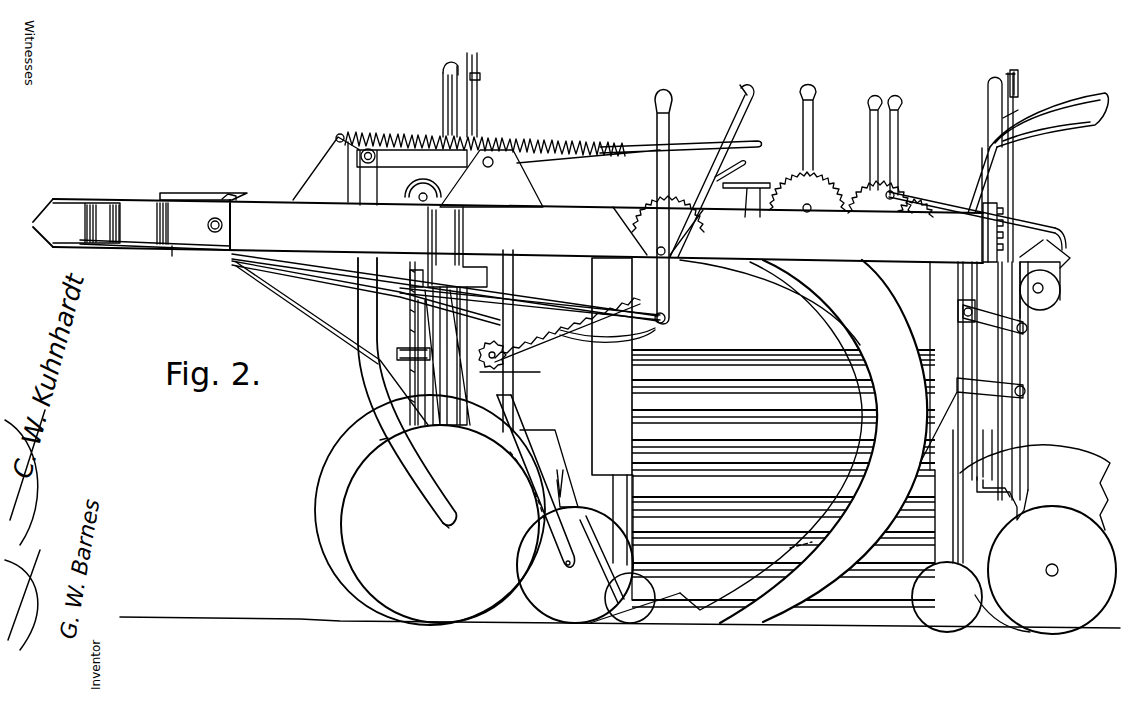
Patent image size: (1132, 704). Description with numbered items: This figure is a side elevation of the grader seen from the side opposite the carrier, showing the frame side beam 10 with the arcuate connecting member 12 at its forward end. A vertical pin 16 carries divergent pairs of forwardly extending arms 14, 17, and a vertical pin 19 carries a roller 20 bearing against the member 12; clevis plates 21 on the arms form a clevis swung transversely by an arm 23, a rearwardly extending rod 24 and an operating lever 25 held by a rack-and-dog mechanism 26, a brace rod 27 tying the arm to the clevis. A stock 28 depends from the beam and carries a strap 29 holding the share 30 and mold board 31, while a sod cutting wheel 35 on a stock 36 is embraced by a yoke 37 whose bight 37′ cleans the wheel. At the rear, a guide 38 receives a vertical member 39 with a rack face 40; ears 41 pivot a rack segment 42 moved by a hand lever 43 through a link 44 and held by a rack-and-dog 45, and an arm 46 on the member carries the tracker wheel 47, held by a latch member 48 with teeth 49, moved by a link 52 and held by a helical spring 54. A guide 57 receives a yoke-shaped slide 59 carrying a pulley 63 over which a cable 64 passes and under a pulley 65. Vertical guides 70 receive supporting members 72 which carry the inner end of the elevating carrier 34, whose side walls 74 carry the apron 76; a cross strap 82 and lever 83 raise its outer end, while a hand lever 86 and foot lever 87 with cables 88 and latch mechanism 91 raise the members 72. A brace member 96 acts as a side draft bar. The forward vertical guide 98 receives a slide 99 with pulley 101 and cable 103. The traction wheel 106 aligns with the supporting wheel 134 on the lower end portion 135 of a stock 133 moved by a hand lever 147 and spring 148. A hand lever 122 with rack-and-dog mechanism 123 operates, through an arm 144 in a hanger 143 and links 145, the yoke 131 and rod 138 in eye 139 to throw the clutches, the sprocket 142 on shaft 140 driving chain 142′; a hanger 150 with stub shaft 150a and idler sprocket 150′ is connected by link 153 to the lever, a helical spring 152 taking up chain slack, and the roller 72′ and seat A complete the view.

The side beam 10 is at (518, 231).
The arcuate connecting member 12 is at (120, 226).
The forwardly extending arms 14 is at (190, 197).
The vertical pin 16 is at (232, 196).
The forwardly extending arms 17 is at (160, 247).
The vertical pin 19 is at (93, 204).
The roller 20 is at (85, 222).
The clevis plates 21 is at (31, 223).
The arm 23 is at (236, 262).
The rearwardly-extending rod 24 is at (340, 274).
The operating lever 25 is at (670, 300).
The rack-and-dog mechanism 26 is at (667, 198).
The brace rod 27 is at (174, 256).
The stock 28 is at (848, 306).
The strap 29 is at (814, 542).
The share 30 is at (634, 622).
The mold board 31 is at (923, 496).
The elevating carrier 34 is at (612, 490).
The sod cutting wheel 35 is at (560, 612).
The stock 36 is at (514, 380).
The yoke 37 is at (560, 460).
The bight 37′ is at (603, 627).
The guide 38 is at (1000, 352).
The vertical member 39 is at (998, 232).
The rack face 40 is at (1028, 223).
The ears 41 is at (1043, 295).
The rack segment 42 is at (1066, 262).
The hand lever 43 is at (899, 153).
The link 44 is at (967, 204).
The rack-and-dog 45 is at (895, 195).
The arm 46 is at (1003, 503).
The tracker wheel 47 is at (1052, 570).
The latch member 48 is at (1027, 430).
The teeth 49 is at (1017, 510).
The link 52 is at (958, 306).
The helical spring 54 is at (1034, 331).
The guide 57 is at (1010, 182).
The yoke-shaped slide 59 is at (987, 104).
The pulley 63 is at (1020, 80).
The cable 64 is at (1006, 118).
The pulley 65 is at (1030, 252).
The vertical guides 70 is at (958, 330).
The supporting members 72 is at (608, 483).
The roller 72′ is at (645, 594).
The side walls 74 is at (628, 520).
The apron 76 is at (783, 478).
The cross strap 82 is at (773, 366).
The lever 83 is at (810, 141).
The hand lever 86 is at (870, 152).
The foot lever 87 is at (745, 163).
The cables 88 is at (752, 208).
The latch mechanism 91 is at (893, 180).
The brace member 96 is at (333, 322).
The vertical guide 98 is at (440, 172).
The yoke-shaped slide 99 is at (456, 105).
The pulley 101 is at (475, 72).
The cable 103 is at (478, 118).
The traction wheel 106 is at (318, 480).
The hand lever 122 is at (730, 135).
The rack-and-dog mechanism 123 is at (699, 213).
The yoke 131 is at (452, 362).
The stock 133 is at (360, 374).
The supporting wheel 134 is at (440, 524).
The lower end portion 135 is at (449, 528).
The rod 138 is at (428, 430).
The eye 139 is at (410, 298).
The shaft 140 is at (415, 188).
The sprocket 142 is at (418, 200).
The chain 142′ is at (426, 246).
The hanger 143 is at (410, 272).
The arm 144 is at (555, 298).
The links 145 is at (397, 354).
The hand lever 147 is at (568, 142).
The spring 148 is at (538, 138).
The hanger 150 is at (510, 338).
The stub shaft 150a is at (510, 356).
The idler sprocket 150′ is at (515, 372).
The helical spring 152 is at (648, 336).
The link 153 is at (668, 320).
The seat A is at (1078, 122).